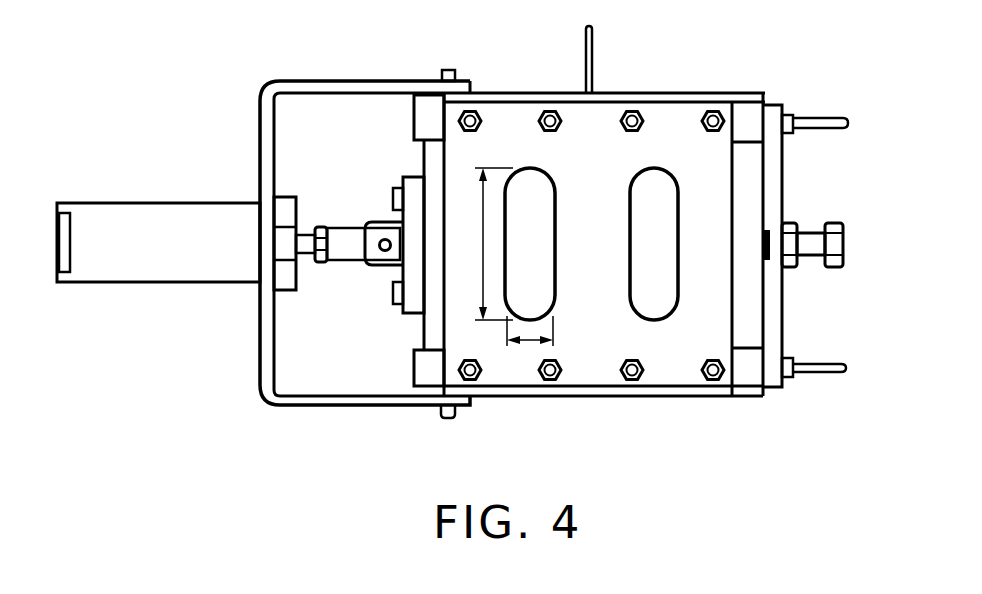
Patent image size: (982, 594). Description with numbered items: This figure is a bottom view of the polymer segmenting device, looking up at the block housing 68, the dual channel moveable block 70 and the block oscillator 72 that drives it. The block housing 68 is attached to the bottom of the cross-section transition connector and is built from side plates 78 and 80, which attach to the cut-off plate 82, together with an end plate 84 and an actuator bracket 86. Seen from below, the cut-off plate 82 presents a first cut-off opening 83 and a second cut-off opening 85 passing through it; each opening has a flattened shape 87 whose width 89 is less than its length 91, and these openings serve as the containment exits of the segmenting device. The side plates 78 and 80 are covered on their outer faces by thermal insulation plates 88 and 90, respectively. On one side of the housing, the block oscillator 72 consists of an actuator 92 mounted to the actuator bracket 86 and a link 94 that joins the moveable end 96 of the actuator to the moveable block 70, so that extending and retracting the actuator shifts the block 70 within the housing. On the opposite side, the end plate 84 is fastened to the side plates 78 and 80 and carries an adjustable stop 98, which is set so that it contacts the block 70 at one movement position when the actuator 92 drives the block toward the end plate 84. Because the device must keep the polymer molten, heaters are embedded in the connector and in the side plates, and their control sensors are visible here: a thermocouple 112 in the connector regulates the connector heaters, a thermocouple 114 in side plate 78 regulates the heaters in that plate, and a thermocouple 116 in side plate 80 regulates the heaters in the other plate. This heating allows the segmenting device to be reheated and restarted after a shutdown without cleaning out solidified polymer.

The block housing 68 is at (686, 92).
The dual channel moveable block 70 is at (430, 170).
The block oscillator 72 is at (248, 302).
The side plate 78 is at (751, 115).
The side plate 80 is at (747, 368).
The cut-off plate 82 is at (501, 120).
The first cut-off opening 83 is at (548, 292).
The end plate 84 is at (770, 156).
The second cut-off opening 85 is at (653, 305).
The actuator bracket 86 is at (303, 80).
The flattened shape 87 is at (527, 170).
The thermal insulation plate 88 is at (603, 95).
The width 89 is at (525, 348).
The thermal insulation plate 90 is at (700, 400).
The length 91 is at (457, 250).
The actuator 92 is at (142, 203).
The link 94 is at (348, 247).
The moveable end 96 is at (306, 225).
The adjustable stop 98 is at (815, 224).
The thermocouple 112 is at (592, 34).
The thermocouple 114 is at (810, 117).
The thermocouple 116 is at (815, 376).